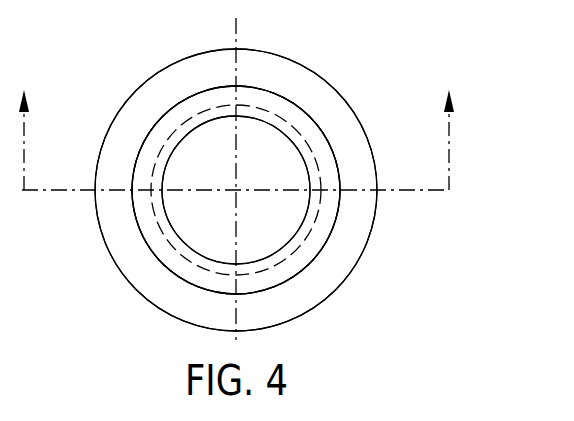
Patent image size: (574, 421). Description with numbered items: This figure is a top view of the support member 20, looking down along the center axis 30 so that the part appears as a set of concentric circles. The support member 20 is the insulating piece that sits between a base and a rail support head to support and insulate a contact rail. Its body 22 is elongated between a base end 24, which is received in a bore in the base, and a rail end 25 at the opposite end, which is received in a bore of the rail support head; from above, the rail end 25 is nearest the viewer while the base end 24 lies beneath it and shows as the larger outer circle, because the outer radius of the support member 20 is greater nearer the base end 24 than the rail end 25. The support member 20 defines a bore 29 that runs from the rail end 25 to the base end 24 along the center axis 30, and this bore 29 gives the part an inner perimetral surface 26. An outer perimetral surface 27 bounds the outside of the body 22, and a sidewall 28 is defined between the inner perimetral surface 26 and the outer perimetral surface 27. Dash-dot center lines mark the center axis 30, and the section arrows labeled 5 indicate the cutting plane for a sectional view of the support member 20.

The section line 5- 5 is at (236, 127).
The support member 20 is at (415, 226).
The body 22 is at (318, 122).
The base end 24 is at (307, 85).
The rail end 25 is at (258, 98).
The inner perimetral surface 26 is at (166, 222).
The outer perimetral surface 27 is at (162, 267).
The sidewall 28 is at (168, 122).
The bore 29 is at (282, 234).
The center axis 30 is at (234, 33).